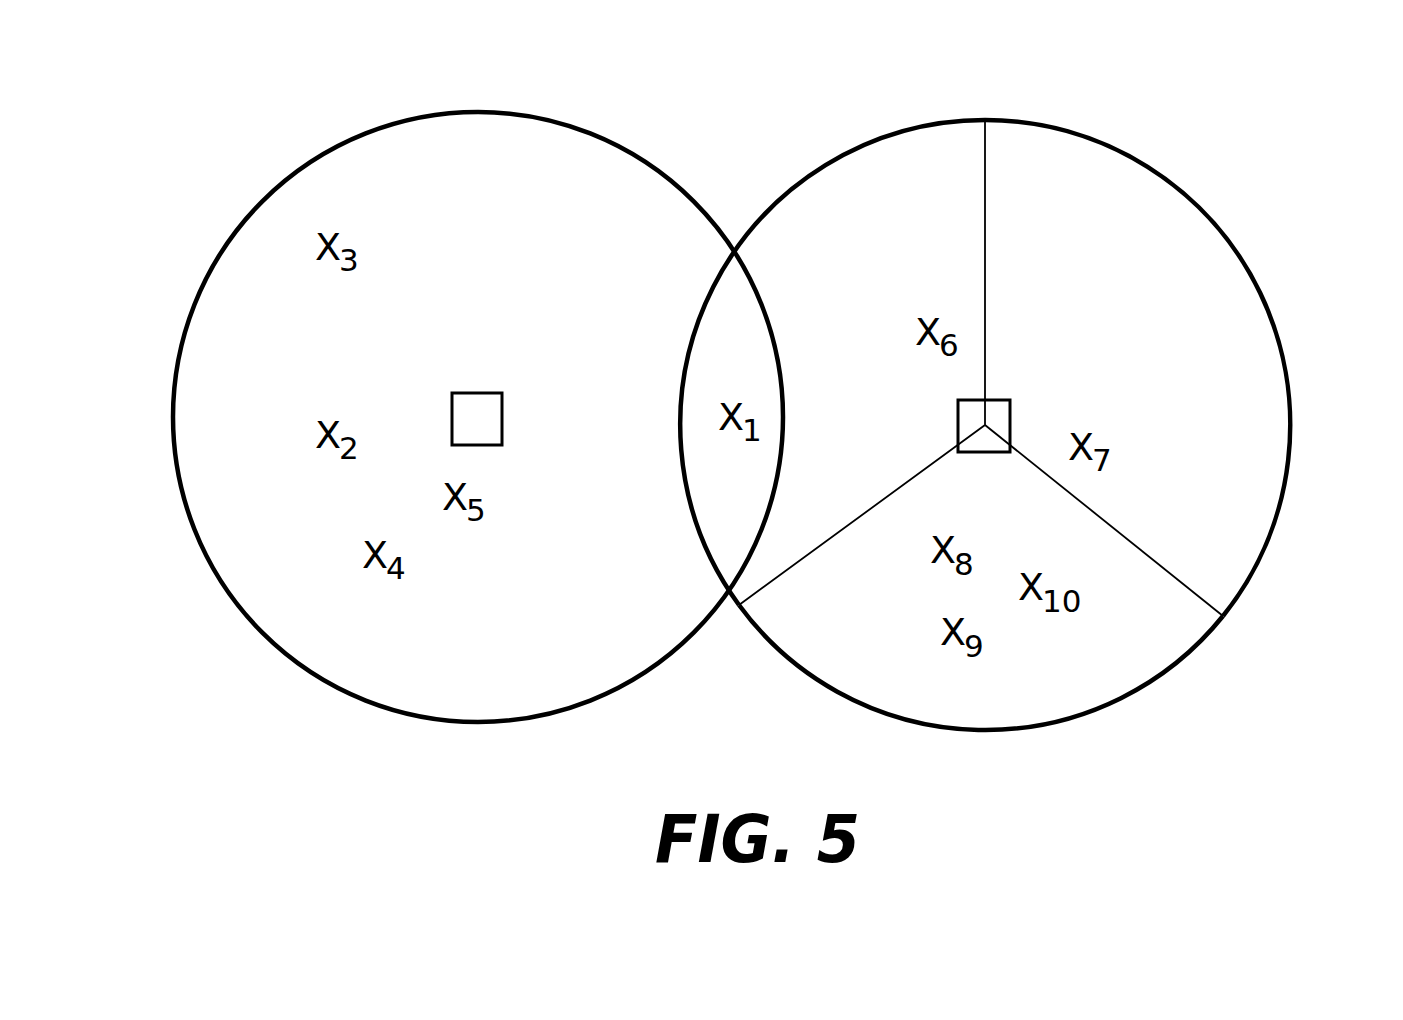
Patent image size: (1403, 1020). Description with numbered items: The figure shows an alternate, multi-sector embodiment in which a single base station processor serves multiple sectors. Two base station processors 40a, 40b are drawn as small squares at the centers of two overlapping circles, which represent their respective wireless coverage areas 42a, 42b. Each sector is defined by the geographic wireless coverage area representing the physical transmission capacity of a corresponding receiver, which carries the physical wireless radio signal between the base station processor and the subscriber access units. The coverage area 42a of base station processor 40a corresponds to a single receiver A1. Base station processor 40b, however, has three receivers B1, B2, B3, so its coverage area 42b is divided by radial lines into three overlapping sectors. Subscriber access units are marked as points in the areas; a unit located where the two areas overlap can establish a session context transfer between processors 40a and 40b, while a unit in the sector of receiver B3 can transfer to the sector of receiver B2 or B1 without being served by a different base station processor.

The base station processor 40a is at (452, 414).
The base station processor 40b is at (1010, 415).
The wireless coverage area 42a is at (432, 720).
The wireless coverage area 42b is at (1032, 439).
The receiver A1 is at (441, 458).
The receiver B1 is at (1090, 712).
The receiver B2 is at (1290, 398).
The receiver B3 is at (890, 132).